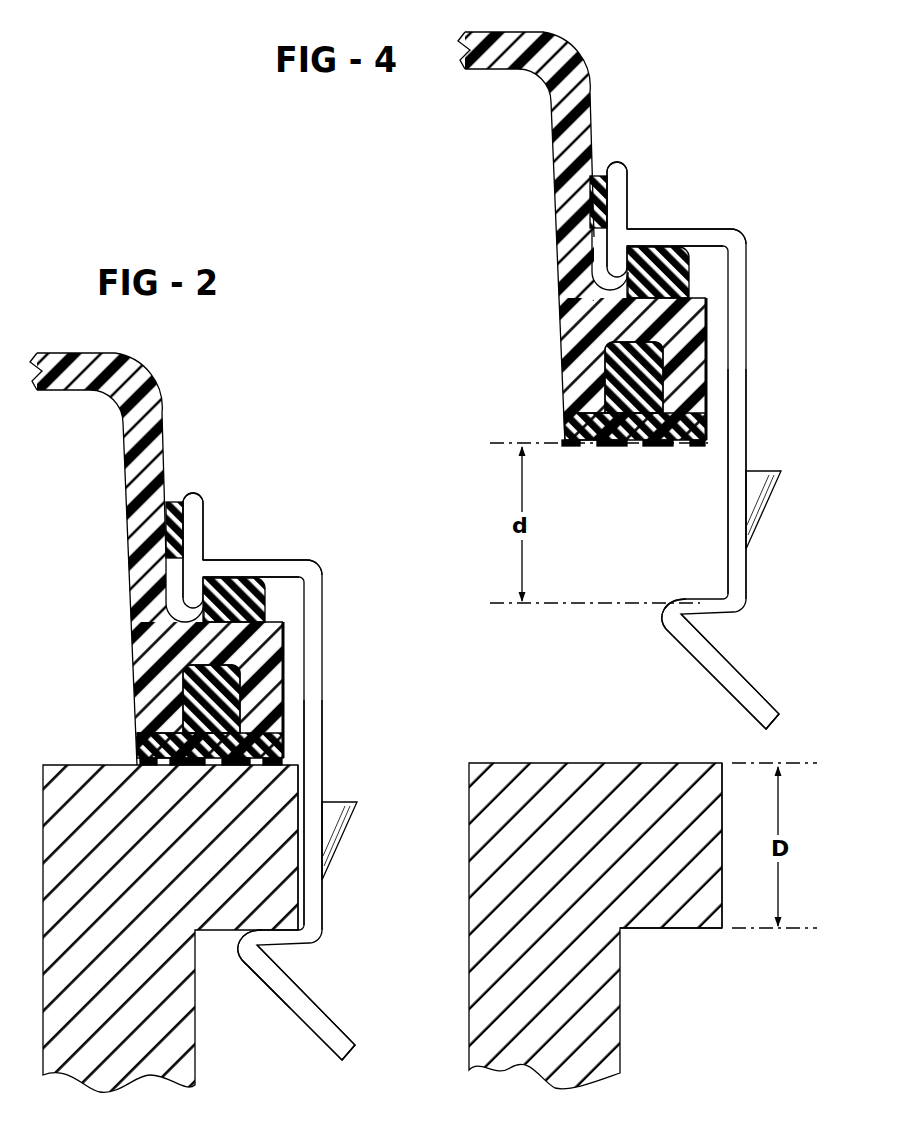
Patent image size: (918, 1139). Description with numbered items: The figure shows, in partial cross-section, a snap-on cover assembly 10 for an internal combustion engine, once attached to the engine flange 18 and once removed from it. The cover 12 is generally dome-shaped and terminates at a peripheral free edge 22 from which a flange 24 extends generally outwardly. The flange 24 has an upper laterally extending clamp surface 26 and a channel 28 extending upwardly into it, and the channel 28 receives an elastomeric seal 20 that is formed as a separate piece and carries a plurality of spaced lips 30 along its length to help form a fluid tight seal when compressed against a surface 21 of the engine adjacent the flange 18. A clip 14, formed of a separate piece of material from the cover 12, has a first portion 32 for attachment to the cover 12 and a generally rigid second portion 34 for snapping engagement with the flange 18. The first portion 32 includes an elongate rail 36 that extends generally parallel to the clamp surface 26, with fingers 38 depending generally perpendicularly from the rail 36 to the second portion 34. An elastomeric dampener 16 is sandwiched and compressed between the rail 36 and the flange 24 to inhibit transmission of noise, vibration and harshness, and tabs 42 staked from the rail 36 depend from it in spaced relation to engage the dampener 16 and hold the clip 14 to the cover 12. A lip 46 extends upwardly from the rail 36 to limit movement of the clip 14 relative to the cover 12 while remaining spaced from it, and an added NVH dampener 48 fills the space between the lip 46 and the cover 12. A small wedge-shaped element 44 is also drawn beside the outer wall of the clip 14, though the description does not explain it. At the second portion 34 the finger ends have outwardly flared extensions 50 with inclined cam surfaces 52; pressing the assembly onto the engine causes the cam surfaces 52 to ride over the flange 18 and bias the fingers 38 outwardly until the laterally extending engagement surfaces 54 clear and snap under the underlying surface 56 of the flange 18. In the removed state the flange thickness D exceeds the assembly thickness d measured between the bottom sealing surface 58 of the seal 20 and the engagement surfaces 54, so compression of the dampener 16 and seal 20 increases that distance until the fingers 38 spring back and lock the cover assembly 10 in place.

In FIG. 2, the cover assembly 10 is at (256, 455).
In FIG. 4, the cover assembly 10 is at (680, 125).
In FIG. 2, the cover 12 is at (105, 355).
In FIG. 4, the cover 12 is at (548, 32).
In FIG. 2, the clip 14 is at (306, 560).
In FIG. 4, the clip 14 is at (731, 229).
In FIG. 2, the elastomeric dampener 16 is at (316, 592).
In FIG. 4, the elastomeric dampener 16 is at (740, 264).
In FIG. 2, the flange 18 is at (300, 900).
In FIG. 4, the flange 18 is at (724, 890).
In FIG. 2, the elastomeric seal 20 is at (142, 756).
In FIG. 4, the elastomeric seal 20 is at (565, 428).
In FIG. 2, the surface 21 is at (100, 765).
In FIG. 4, the surface 21 is at (557, 765).
In FIG. 2, the peripheral free edge 22 is at (142, 742).
In FIG. 4, the peripheral free edge 22 is at (565, 412).
In FIG. 2, the flange 24 is at (287, 642).
In FIG. 4, the flange 24 is at (710, 318).
In FIG. 2, the clamp surface 26 is at (270, 605).
In FIG. 4, the clamp surface 26 is at (692, 282).
In FIG. 2, the channel 28 is at (230, 682).
In FIG. 4, the channel 28 is at (655, 352).
In FIG. 2, the lips 30 is at (160, 762).
In FIG. 4, the lips 30 is at (582, 447).
In FIG. 2, the first portion 32 is at (241, 528).
In FIG. 4, the first portion 32 is at (666, 196).
In FIG. 2, the second portion 34 is at (362, 968).
In FIG. 4, the second portion 34 is at (752, 628).
In FIG. 2, the rail 36 is at (258, 560).
In FIG. 4, the rail 36 is at (682, 229).
In FIG. 2, the fingers 38 is at (322, 770).
In FIG. 4, the fingers 38 is at (748, 440).
In FIG. 2, the tabs 42 is at (190, 591).
In FIG. 4, the tabs 42 is at (615, 262).
In FIG. 2, the wedge 44 is at (343, 835).
In FIG. 4, the wedge 44 is at (767, 503).
In FIG. 2, the lip 46 is at (204, 512).
In FIG. 4, the lip 46 is at (629, 180).
In FIG. 2, the NVH dampener 48 is at (166, 530).
In FIG. 4, the NVH dampener 48 is at (590, 202).
In FIG. 2, the outwardly flared extensions 50 is at (302, 987).
In FIG. 4, the outwardly flared extensions 50 is at (752, 690).
In FIG. 2, the inclined cam surfaces 52 is at (322, 1048).
In FIG. 4, the inclined cam surfaces 52 is at (690, 660).
In FIG. 2, the engagement surfaces 54 is at (262, 938).
In FIG. 4, the engagement surfaces 54 is at (685, 607).
In FIG. 2, the underlying surface 56 is at (260, 965).
In FIG. 4, the underlying surface 56 is at (680, 930).
In FIG. 2, the bottom sealing surface 58 is at (183, 768).
In FIG. 4, the bottom sealing surface 58 is at (618, 450).